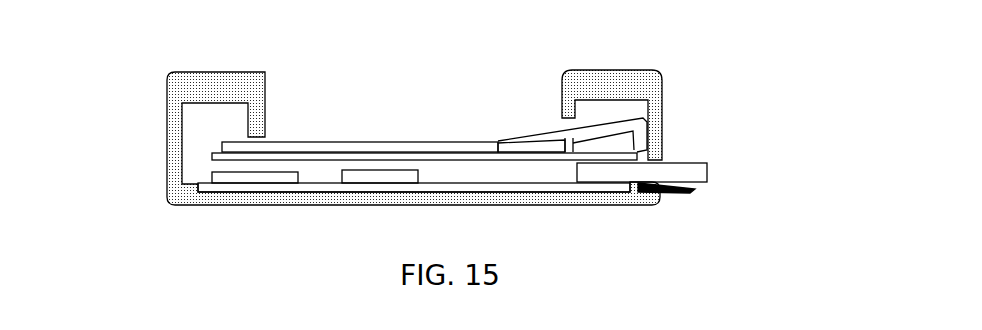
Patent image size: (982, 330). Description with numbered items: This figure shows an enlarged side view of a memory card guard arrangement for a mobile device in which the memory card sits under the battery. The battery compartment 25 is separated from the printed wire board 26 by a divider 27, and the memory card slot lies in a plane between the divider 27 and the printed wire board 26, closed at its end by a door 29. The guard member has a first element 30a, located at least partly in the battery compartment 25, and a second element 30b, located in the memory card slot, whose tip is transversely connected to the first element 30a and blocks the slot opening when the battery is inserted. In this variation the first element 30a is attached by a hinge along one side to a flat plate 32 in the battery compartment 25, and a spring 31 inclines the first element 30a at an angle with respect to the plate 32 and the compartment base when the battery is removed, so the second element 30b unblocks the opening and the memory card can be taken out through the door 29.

The battery compartment 25 is at (328, 72).
The printed wire board (PWB) 26 is at (262, 226).
The divider 27 is at (312, 158).
The flat plate 32 is at (384, 147).
The spring 31 is at (650, 100).
The first element 30a is at (522, 137).
The second element 30b is at (650, 117).
The door 29 is at (689, 192).